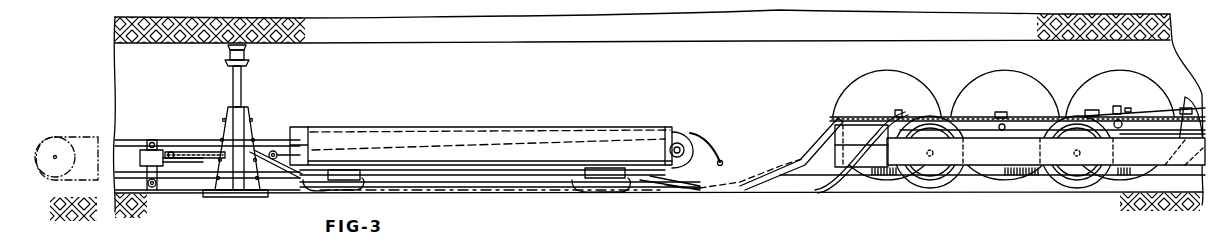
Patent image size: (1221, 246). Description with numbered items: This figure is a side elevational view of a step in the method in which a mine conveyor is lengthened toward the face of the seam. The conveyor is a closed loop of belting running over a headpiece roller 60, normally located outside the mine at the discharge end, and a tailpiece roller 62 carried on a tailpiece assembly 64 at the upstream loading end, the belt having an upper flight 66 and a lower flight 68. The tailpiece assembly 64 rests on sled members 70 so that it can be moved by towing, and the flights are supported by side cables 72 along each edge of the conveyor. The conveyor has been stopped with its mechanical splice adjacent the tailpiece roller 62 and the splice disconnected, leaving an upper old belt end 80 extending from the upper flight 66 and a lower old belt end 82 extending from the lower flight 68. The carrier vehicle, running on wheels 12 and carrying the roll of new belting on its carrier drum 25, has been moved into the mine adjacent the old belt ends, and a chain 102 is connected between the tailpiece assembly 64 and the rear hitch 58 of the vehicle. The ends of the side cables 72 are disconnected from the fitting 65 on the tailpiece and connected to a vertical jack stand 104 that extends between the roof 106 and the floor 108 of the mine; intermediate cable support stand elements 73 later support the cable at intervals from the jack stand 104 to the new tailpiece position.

The wheels 12 is at (1075, 188).
The carrier drum 25 is at (992, 143).
The rear hitch 58 is at (800, 158).
The headpiece roller 60 is at (57, 137).
The tailpiece roller 62 is at (688, 135).
The tailpiece assembly 64 is at (470, 128).
The fitting 65 is at (280, 150).
The upper flight 66 is at (200, 140).
The lower flight 68 is at (180, 183).
The sled members 70 is at (303, 190).
The side cables 72 is at (122, 140).
The intermediate cable support stand elements 73 is at (147, 165).
The upper old belt end 80 is at (718, 160).
The lower old belt end 82 is at (690, 186).
The chain 102 is at (740, 176).
The vertical jack stand 104 is at (246, 78).
The roof 106 is at (343, 47).
The floor 108 is at (975, 188).